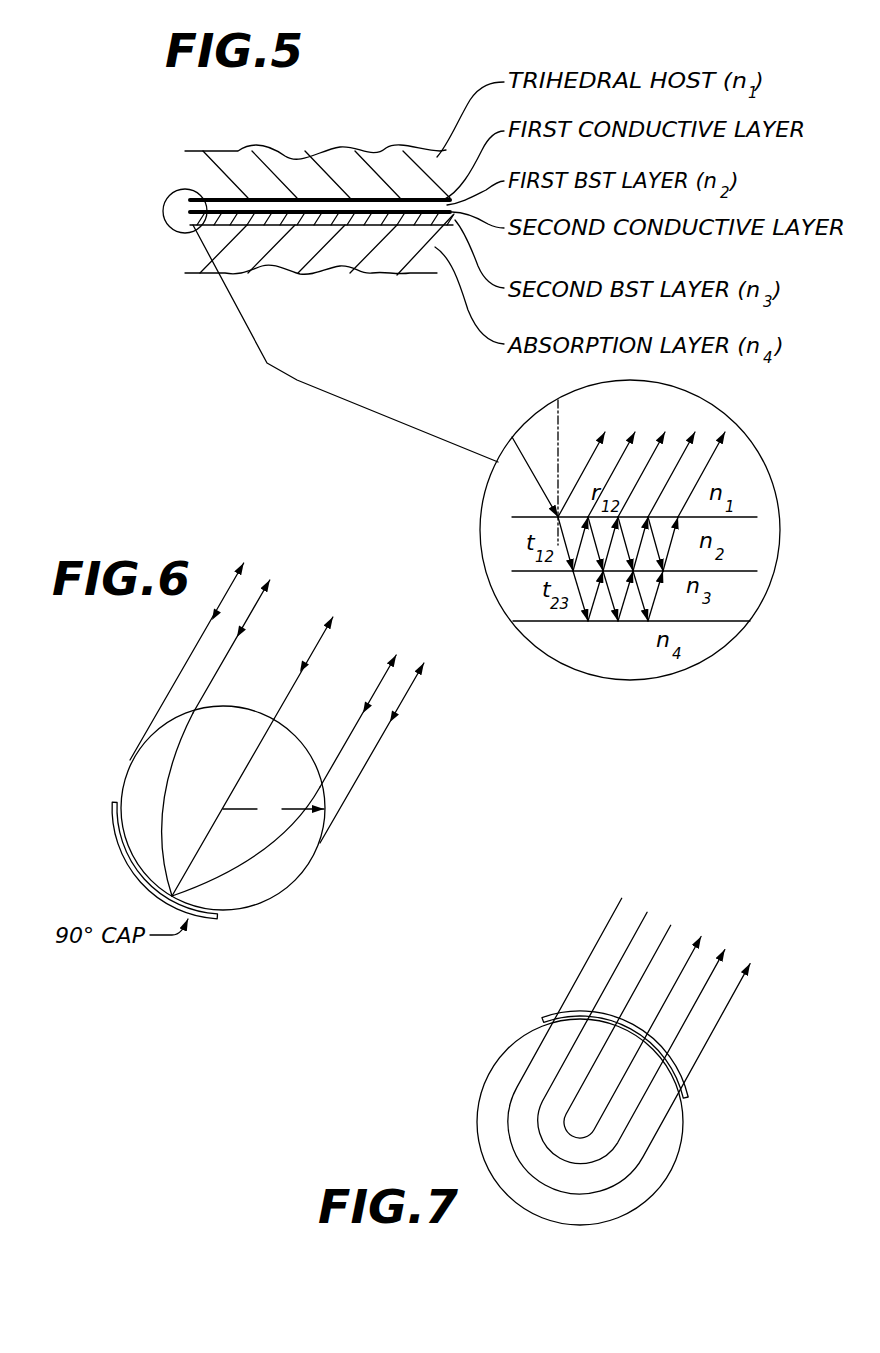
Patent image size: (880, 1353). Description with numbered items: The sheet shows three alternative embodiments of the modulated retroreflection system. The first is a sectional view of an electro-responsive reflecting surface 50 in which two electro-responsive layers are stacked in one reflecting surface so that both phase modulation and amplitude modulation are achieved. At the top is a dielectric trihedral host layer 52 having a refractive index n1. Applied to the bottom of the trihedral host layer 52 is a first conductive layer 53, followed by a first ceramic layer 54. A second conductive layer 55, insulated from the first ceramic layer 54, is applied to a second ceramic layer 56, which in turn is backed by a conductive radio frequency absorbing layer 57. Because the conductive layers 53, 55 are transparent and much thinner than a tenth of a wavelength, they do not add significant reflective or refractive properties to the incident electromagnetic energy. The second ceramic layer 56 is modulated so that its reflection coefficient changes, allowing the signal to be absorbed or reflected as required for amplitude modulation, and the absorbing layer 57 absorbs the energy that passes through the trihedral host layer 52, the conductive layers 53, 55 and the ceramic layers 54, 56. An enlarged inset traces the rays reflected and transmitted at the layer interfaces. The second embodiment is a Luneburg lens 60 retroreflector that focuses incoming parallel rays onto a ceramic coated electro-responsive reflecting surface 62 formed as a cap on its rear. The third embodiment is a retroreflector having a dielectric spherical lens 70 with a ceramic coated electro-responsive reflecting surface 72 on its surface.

In FIG. 5, the electro-responsive reflecting surface 50 is at (402, 72).
In FIG. 5, the trihedral host layer 52 is at (333, 153).
In FIG. 5, the first conductive layer 53 is at (260, 198).
In FIG. 5, the first ceramic layer 54 is at (322, 207).
In FIG. 5, the second conductive layer 55 is at (363, 218).
In FIG. 5, the second ceramic layer 56 is at (393, 228).
In FIG. 5, the conductive radio frequency absorbing layer 57 is at (410, 247).
In FIG. 6, the Luneburg lens 60 is at (127, 767).
In FIG. 6, the ceramic coated electro-responsive reflecting surface 62 is at (117, 842).
In FIG. 7, the dielectric spherical lens 70 is at (495, 1065).
In FIG. 7, the ceramic coated electro-responsive reflecting surface 72 is at (687, 1097).